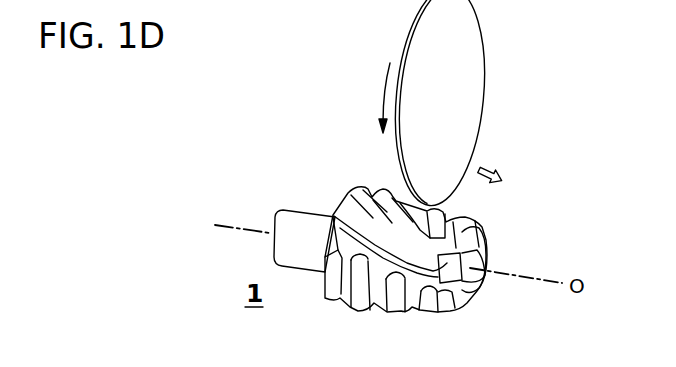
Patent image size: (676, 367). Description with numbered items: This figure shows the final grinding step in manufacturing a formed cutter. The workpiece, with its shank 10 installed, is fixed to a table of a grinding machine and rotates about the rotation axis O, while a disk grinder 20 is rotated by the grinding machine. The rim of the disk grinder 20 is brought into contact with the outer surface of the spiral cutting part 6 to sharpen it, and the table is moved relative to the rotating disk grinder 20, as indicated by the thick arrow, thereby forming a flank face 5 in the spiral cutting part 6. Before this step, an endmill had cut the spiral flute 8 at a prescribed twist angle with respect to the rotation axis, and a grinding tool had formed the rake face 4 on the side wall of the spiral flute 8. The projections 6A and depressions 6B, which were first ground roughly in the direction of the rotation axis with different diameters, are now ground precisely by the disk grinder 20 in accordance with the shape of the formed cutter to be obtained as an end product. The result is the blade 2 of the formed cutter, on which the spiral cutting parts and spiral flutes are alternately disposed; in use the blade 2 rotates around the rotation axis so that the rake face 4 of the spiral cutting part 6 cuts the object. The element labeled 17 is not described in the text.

The blade 2 is at (416, 272).
The rake face 4 is at (489, 252).
The flank face 5 is at (446, 211).
The spiral cutting part 6 is at (483, 279).
The projections 6A is at (408, 313).
The depressions 6B is at (396, 313).
The spiral flute 8 is at (385, 268).
The shank 10 is at (307, 211).
The tooth tip 17 is at (487, 226).
The disk grinder 20 is at (462, 94).